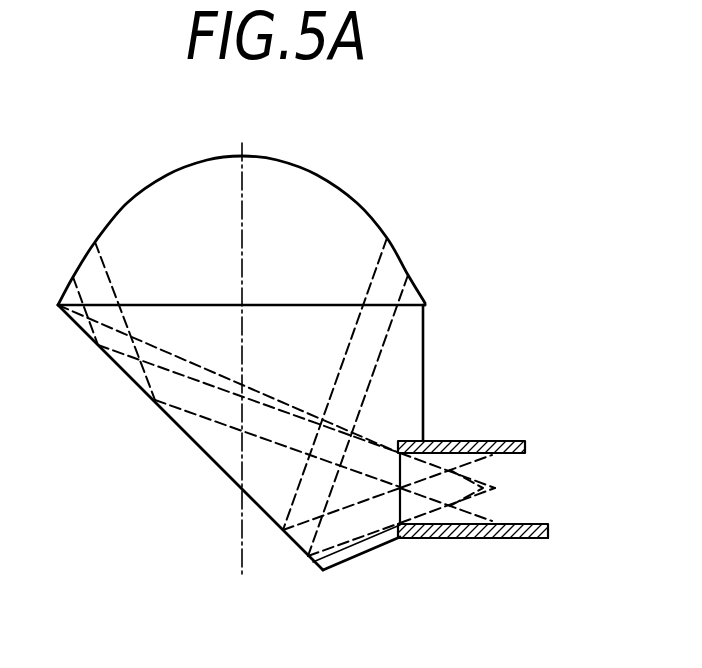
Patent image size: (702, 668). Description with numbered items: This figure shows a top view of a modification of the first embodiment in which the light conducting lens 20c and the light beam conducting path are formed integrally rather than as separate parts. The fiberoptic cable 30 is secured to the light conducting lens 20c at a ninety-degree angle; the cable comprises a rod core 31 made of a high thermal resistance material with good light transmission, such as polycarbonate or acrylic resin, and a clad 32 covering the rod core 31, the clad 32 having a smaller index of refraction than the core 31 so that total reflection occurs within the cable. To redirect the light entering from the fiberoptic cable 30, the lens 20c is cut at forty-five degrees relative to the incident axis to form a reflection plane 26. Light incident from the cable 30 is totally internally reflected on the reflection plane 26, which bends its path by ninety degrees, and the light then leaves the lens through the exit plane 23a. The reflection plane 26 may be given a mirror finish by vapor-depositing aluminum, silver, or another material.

The light conducting lens 20c is at (264, 331).
The exit plane 23a is at (290, 157).
The reflection plane 26 is at (192, 440).
The fiberoptic cable 30 is at (499, 436).
The rod core 31 is at (517, 510).
The clad 32 is at (467, 540).